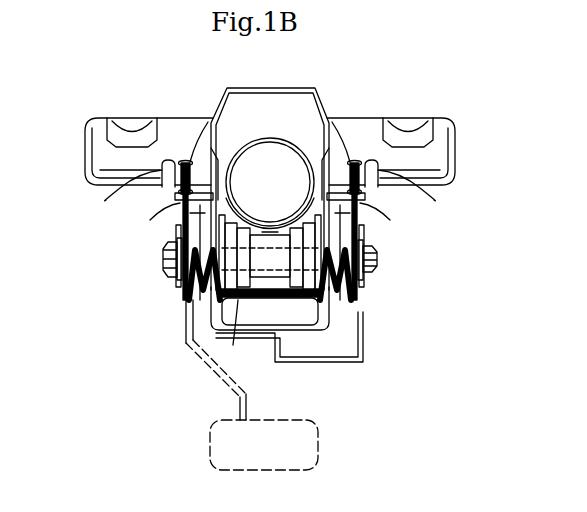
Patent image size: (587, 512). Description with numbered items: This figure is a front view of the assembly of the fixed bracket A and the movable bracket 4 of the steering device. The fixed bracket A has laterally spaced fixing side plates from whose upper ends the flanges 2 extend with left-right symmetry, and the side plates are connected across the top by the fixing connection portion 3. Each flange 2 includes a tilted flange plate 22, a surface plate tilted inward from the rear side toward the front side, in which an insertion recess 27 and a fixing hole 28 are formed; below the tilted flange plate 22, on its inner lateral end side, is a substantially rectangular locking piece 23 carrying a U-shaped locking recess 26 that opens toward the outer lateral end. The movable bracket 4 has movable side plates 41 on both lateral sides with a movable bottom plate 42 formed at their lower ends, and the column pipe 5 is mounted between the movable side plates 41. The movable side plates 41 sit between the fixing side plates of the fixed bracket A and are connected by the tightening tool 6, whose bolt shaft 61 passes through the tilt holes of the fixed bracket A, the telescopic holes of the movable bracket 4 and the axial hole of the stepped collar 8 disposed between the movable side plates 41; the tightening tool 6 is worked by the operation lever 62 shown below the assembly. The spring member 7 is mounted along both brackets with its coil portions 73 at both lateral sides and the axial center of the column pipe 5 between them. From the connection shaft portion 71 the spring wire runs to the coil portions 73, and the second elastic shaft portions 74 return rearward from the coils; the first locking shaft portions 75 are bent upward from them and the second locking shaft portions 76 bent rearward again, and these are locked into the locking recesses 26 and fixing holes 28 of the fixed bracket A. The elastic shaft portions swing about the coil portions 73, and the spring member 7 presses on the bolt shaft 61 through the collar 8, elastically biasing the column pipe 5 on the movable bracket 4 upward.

The fixed bracket A is at (458, 127).
The flange 2 is at (83, 137).
The fixing connection portion 3 is at (296, 88).
The movable bracket 4 is at (225, 208).
The column pipe 5 is at (269, 140).
The tightening tool 6 is at (161, 261).
The spring member 7 is at (358, 286).
The collar 8 is at (288, 225).
The tilted flange plate 22 is at (96, 167).
The locking piece 23 is at (176, 213).
The locking recess 26 is at (178, 197).
The insertion recess 27 is at (121, 186).
The fixing hole 28 is at (186, 160).
The movable side plate 41 is at (186, 332).
The movable bottom plate 42 is at (283, 327).
The bolt shaft 61 is at (250, 222).
The operation lever 62 is at (210, 437).
The connection shaft portion 71 is at (228, 333).
The coil portion 73 is at (196, 303).
The second elastic shaft portion 74 is at (175, 231).
The first locking shaft portion 75 is at (211, 149).
The second locking shaft portion 76 is at (196, 124).